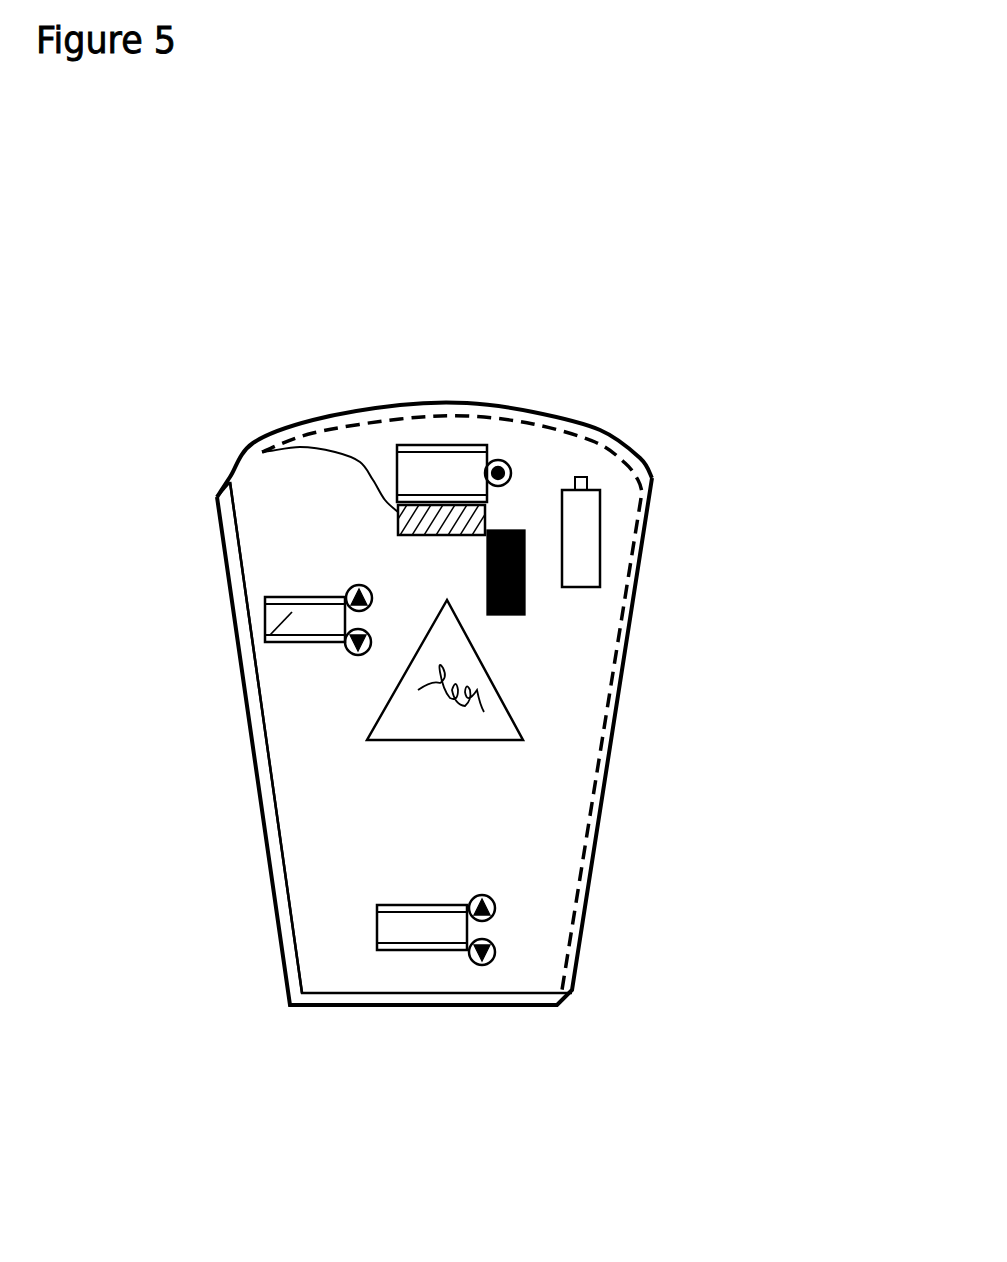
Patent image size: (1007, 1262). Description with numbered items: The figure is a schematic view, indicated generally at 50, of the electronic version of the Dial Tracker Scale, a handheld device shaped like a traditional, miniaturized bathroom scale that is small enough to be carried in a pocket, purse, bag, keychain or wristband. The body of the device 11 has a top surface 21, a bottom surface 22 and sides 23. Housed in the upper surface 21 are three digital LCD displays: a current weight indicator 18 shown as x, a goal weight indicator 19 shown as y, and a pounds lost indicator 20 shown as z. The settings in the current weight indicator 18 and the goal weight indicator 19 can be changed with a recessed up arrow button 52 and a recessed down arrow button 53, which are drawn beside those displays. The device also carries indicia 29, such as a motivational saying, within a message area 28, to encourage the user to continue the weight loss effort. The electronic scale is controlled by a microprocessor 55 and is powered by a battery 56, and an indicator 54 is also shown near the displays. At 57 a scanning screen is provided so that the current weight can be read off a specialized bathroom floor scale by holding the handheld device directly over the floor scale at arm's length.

The housing 11 is at (595, 838).
The current weight indicator 18 is at (440, 935).
The goal weight indicator 19 is at (265, 640).
The pounds lost indicator 20 is at (458, 473).
The top surface 21 is at (543, 767).
The bottom surface 22 is at (628, 533).
The sides 23 is at (275, 872).
The warning triangle symbol field 28 is at (503, 727).
The indicia 29 is at (477, 690).
The electronic Dial Tracker Scale 50 is at (300, 90).
The recessed up arrow button 52 is at (361, 585).
The recessed down arrow button 53 is at (358, 655).
The indicator lamp 54 is at (511, 478).
The microprocessor 55 is at (487, 572).
The battery 56 is at (580, 497).
The scanning screen 57 is at (262, 452).